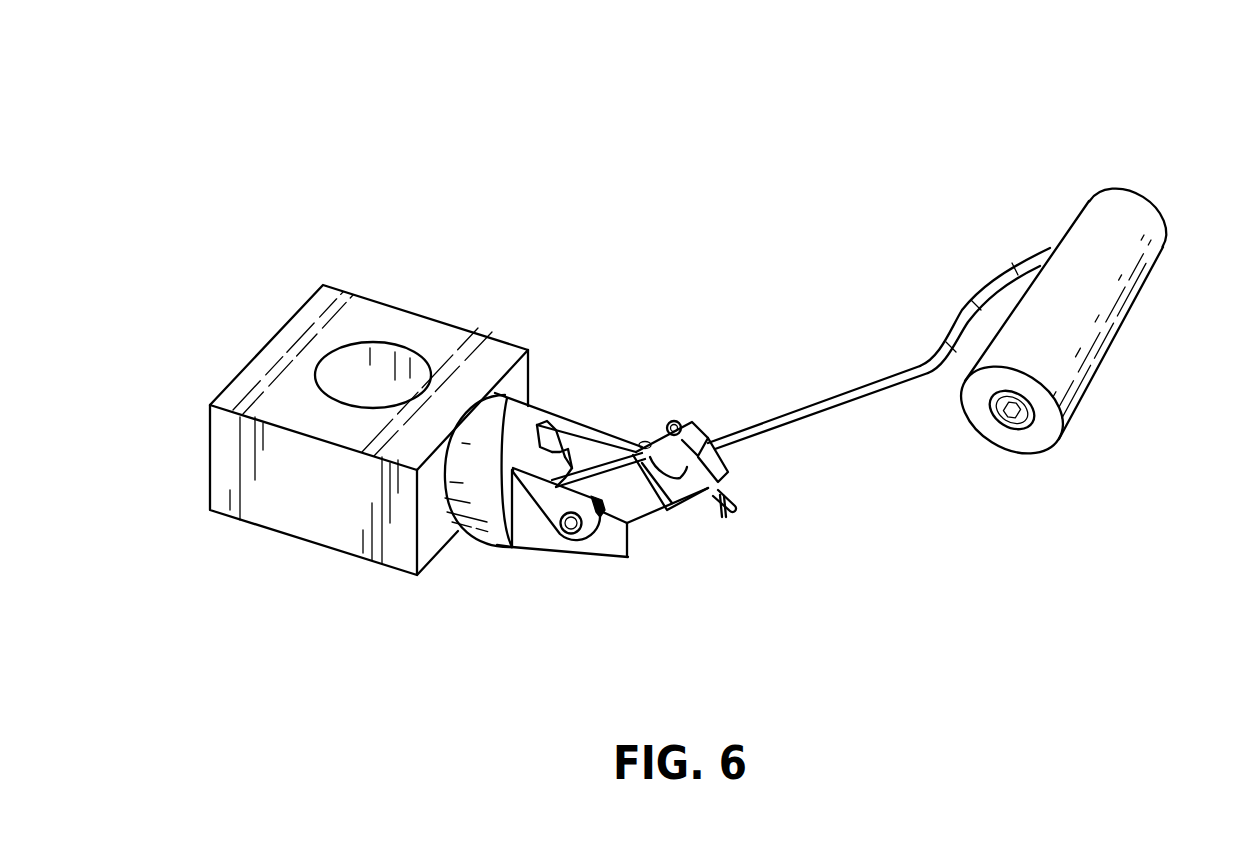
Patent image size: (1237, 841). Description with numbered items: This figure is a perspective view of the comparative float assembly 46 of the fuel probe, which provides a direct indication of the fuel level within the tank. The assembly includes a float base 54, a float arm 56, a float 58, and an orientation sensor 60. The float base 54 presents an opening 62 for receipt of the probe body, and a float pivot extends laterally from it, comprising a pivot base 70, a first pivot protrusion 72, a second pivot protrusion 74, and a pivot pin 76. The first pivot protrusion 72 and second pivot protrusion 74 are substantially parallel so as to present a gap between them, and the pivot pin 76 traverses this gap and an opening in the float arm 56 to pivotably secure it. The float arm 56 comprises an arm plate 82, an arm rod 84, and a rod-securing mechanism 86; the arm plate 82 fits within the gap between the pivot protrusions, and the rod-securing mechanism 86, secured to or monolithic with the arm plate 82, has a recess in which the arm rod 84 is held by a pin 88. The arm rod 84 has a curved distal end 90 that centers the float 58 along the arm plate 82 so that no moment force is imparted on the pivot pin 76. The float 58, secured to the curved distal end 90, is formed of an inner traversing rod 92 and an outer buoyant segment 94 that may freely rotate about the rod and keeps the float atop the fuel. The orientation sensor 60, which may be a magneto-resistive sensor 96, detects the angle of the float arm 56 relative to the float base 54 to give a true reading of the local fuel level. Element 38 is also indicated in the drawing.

The comparative float assembly 46 is at (683, 66).
The float base 54 is at (306, 316).
The opening 62 is at (381, 370).
The pivot base 70 is at (514, 408).
The second pivot protrusion 74 is at (530, 541).
The arm plate 82 is at (645, 541).
The first pivot protrusion 72 is at (618, 430).
The arm 38 is at (580, 446).
The pivot pin 76 is at (571, 536).
The orientation sensor 60 is at (550, 436).
The magneto-resistive sensor 96 is at (550, 450).
The pin 88 is at (683, 423).
The rod-securing mechanism 86 is at (671, 490).
The arm rod 84 is at (818, 396).
The float arm 56 is at (714, 314).
The curved distal end 90 is at (1031, 248).
The float 58 is at (1150, 367).
The outer buoyant segment 94 is at (1067, 392).
The inner traversing rod 92 is at (1006, 422).